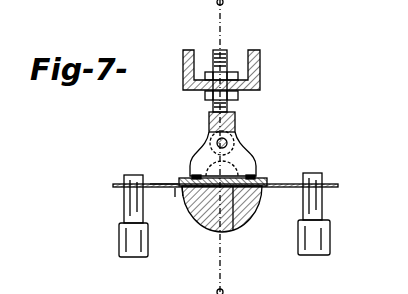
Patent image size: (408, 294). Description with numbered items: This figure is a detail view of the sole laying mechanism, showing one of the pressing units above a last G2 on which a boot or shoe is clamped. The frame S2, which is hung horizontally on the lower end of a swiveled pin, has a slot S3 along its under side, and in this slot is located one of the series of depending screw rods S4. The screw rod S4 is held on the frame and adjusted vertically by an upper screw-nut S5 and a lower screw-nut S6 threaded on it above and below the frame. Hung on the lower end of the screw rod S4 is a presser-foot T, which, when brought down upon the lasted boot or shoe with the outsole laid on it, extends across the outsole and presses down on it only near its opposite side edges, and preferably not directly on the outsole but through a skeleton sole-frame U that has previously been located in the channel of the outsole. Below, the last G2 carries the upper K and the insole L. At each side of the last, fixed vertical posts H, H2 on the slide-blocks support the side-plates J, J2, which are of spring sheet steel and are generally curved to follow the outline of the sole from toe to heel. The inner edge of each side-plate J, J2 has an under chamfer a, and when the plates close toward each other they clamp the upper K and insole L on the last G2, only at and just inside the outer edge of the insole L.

The frame S2 is at (258, 70).
The slot S3 is at (205, 92).
The screw rod S4 is at (234, 113).
The upper screw-nut S5 is at (232, 75).
The lower screw-nut S6 is at (240, 97).
The presser-foot T is at (246, 154).
The skeleton sole-frame U is at (197, 175).
The side-plate J is at (292, 183).
The side-plate J2 is at (158, 184).
The under chamfer a is at (167, 201).
The last G2 is at (218, 228).
The upper K is at (232, 230).
The insole L is at (190, 216).
The vertical post H2 is at (133, 175).
The vertical post H is at (316, 176).